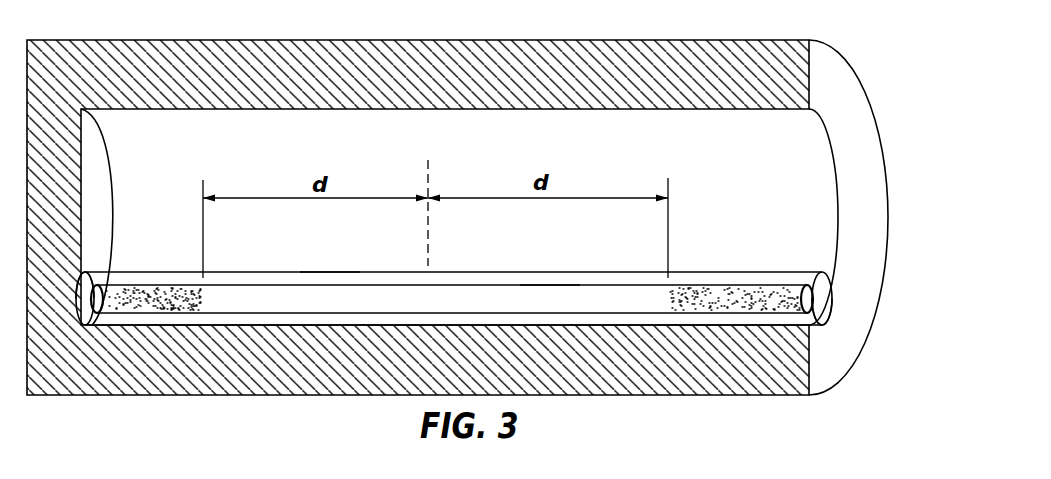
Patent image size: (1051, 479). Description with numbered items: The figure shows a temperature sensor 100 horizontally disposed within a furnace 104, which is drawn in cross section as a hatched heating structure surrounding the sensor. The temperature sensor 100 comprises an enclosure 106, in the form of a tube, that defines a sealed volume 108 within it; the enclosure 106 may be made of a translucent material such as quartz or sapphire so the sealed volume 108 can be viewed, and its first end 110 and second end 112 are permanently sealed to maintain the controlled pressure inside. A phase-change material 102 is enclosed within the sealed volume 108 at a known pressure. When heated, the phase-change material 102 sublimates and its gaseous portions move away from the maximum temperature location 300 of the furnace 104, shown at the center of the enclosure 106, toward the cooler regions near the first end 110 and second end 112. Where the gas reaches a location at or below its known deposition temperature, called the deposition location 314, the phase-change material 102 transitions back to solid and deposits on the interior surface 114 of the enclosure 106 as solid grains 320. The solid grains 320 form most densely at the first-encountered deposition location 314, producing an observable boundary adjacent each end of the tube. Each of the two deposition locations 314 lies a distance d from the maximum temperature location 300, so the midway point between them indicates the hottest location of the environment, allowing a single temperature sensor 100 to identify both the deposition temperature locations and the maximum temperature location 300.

The temperature sensor 100 is at (591, 176).
The phase-change material 102 is at (453, 262).
The furnace 104 is at (855, 117).
The enclosure 106 is at (475, 281).
The sealed volume 108 is at (332, 298).
The first end 110 is at (92, 258).
The second end 112 is at (817, 262).
The interior surface 114 is at (552, 302).
The maximum temperature location 300 is at (430, 199).
The deposition location 314 is at (435, 216).
The solid grains 320 is at (200, 308).